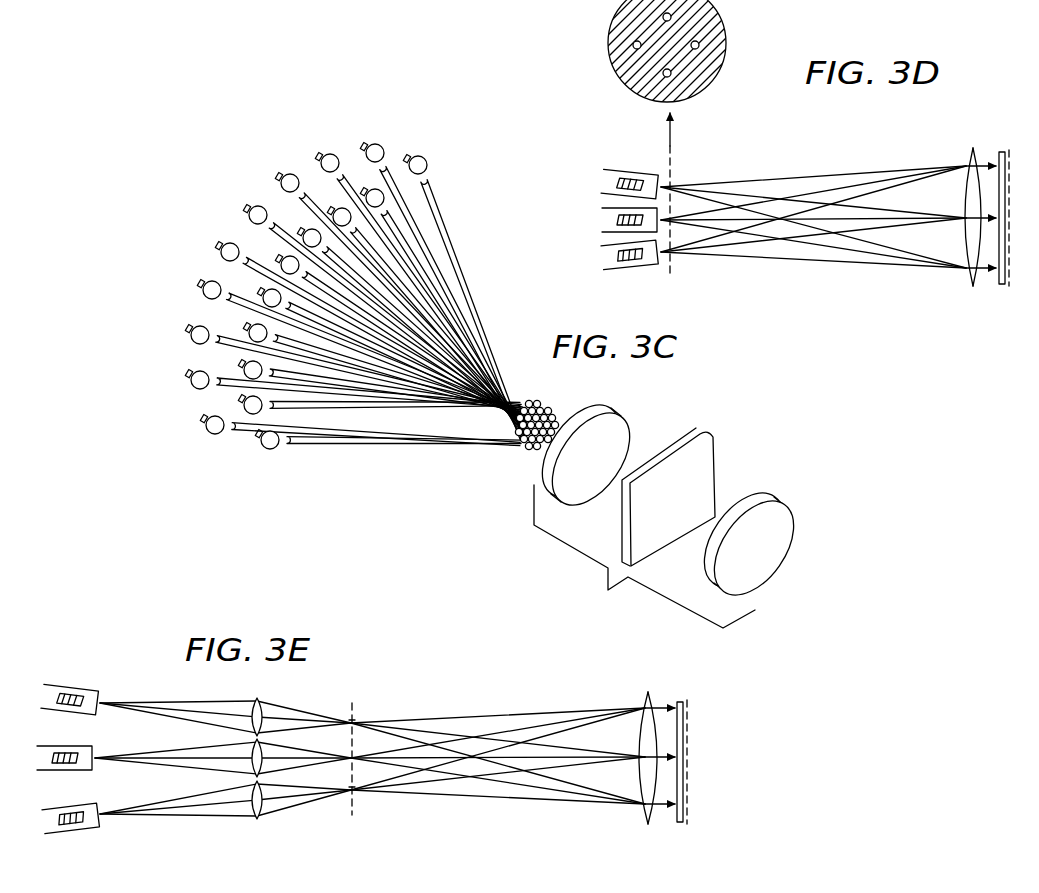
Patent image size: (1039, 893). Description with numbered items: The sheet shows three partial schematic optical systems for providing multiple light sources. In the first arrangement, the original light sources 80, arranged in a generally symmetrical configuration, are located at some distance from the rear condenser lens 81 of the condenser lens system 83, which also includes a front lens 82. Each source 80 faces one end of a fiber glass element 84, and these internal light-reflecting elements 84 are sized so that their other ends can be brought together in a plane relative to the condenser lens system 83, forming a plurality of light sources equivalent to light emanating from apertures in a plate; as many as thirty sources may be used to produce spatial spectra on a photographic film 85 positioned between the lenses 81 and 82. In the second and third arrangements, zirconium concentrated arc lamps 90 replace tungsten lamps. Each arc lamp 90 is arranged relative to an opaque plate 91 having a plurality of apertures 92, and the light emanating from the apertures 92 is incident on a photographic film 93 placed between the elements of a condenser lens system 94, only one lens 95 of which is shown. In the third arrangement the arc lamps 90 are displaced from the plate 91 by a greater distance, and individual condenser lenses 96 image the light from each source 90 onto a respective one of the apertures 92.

In FIG. 3C, the light sources 80 is at (322, 159).
In FIG. 3C, the rear condenser lens 81 is at (597, 406).
In FIG. 3C, the front lens 82 is at (757, 497).
In FIG. 3C, the condenser lens system 83 is at (644, 556).
In FIG. 3C, the fiber glass element 84 is at (455, 259).
In FIG. 3C, the photographic film 85 is at (690, 432).
In FIG. 3D, the zirconium concentrated arc lamps 90 is at (620, 173).
In FIG. 3E, the zirconium concentrated arc lamps 90 is at (78, 688).
In FIG. 3D, the opaque plate 91 is at (716, 66).
In FIG. 3E, the opaque plate 91 is at (354, 712).
In FIG. 3D, the apertures 92 is at (634, 47).
In FIG. 3E, the apertures 92 is at (356, 795).
In FIG. 3D, the photographic film 93 is at (1003, 152).
In FIG. 3E, the photographic film 93 is at (686, 708).
In FIG. 3D, the condenser lens system 94 is at (962, 278).
In FIG. 3E, the condenser lens system 94 is at (641, 699).
In FIG. 3D, the lens 95 is at (972, 150).
In FIG. 3E, the lens 95 is at (642, 812).
In FIG. 3E, the individual condenser lenses 96 is at (262, 702).